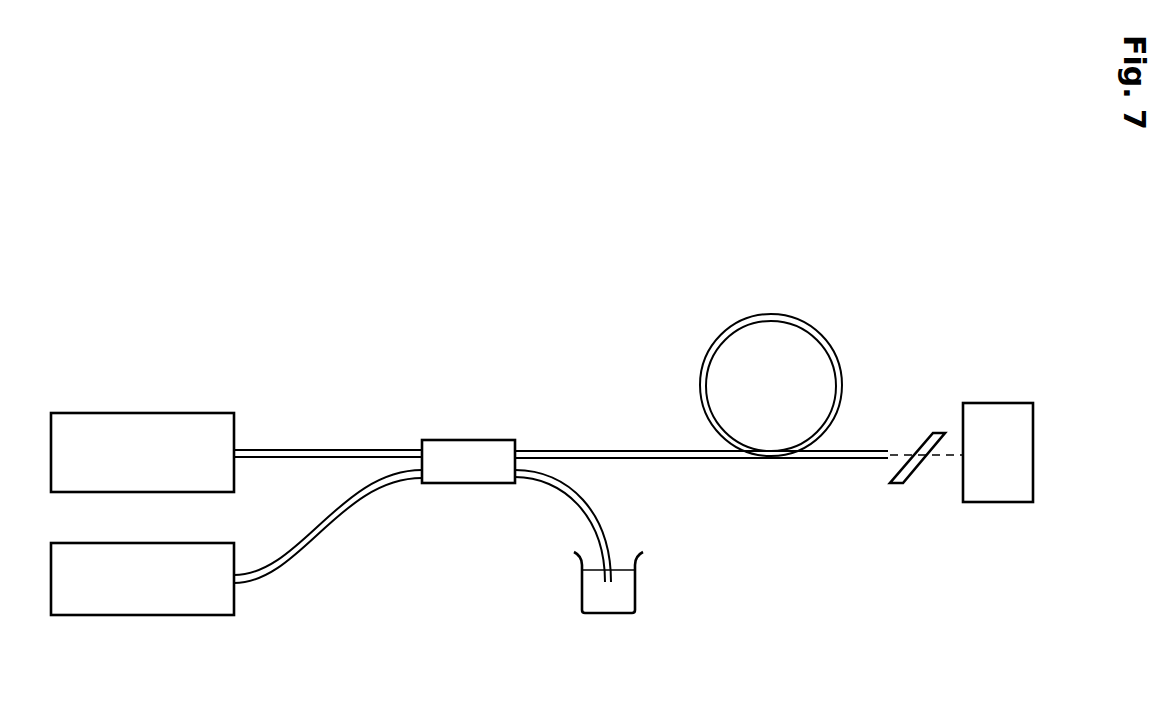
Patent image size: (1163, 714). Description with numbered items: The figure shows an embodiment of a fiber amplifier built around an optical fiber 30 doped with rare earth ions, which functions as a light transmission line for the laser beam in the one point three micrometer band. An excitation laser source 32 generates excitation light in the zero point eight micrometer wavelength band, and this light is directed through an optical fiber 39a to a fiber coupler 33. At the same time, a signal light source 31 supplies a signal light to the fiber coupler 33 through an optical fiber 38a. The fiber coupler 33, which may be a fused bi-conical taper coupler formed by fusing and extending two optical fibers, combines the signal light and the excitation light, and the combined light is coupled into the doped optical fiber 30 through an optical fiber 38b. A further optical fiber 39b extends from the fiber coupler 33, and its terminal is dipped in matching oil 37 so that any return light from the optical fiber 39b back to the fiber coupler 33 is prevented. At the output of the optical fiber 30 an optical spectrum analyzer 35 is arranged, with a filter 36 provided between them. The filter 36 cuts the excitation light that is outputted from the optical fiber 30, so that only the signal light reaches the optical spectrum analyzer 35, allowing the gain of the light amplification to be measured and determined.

The optical fiber 30 is at (722, 460).
The signal light source 31 is at (176, 413).
The excitation laser source 32 is at (187, 615).
The fiber coupler 33 is at (453, 440).
The optical spectrum analyzer 35 is at (990, 403).
The filter 36 is at (918, 470).
The matching oil 37 is at (636, 597).
The optical fiber 38a is at (320, 450).
The optical fiber 38b is at (563, 451).
The optical fiber 39a is at (325, 530).
The optical fiber 39b is at (552, 482).